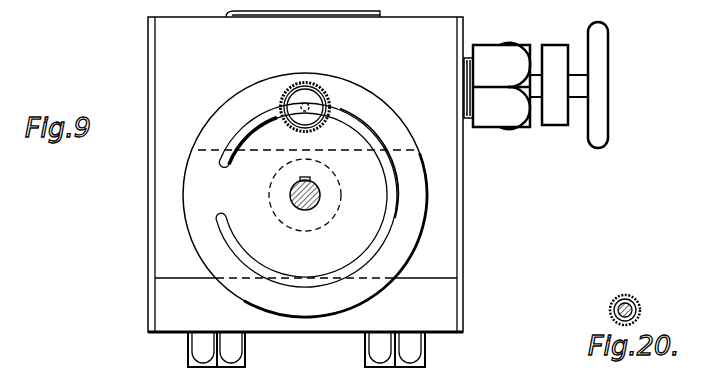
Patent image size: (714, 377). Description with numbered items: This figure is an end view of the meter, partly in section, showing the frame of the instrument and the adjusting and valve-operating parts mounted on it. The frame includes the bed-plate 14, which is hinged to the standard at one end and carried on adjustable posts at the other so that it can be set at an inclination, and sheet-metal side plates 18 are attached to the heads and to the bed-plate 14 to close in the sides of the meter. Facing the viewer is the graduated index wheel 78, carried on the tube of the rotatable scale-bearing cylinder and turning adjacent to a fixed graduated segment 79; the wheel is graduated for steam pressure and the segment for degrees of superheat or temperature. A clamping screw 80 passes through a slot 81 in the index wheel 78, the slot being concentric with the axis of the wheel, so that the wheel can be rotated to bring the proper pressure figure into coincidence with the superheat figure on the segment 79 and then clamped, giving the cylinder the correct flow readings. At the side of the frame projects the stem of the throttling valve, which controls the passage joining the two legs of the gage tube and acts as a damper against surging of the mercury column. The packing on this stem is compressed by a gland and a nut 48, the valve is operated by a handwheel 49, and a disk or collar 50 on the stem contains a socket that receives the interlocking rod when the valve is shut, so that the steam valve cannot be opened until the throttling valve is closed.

The bed-plate 14 is at (445, 323).
The side plates 18 is at (148, 226).
The nut 48 is at (503, 50).
The handwheel 49 is at (598, 89).
The disk or collar 50 is at (552, 128).
The graduated index wheel 78 is at (305, 195).
The fixed graduated segment 79 is at (200, 150).
The clamping screw 80 is at (320, 96).
The slot 81 is at (390, 171).